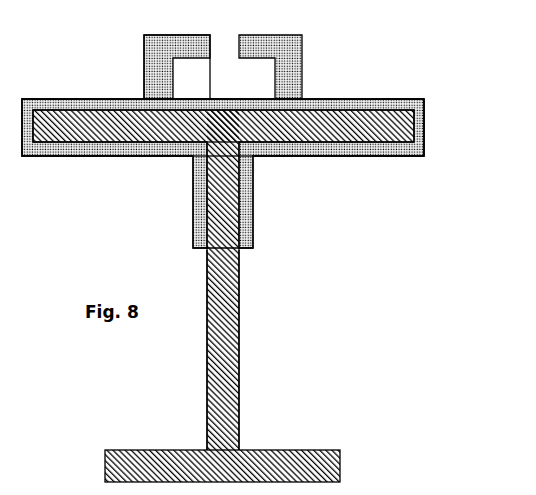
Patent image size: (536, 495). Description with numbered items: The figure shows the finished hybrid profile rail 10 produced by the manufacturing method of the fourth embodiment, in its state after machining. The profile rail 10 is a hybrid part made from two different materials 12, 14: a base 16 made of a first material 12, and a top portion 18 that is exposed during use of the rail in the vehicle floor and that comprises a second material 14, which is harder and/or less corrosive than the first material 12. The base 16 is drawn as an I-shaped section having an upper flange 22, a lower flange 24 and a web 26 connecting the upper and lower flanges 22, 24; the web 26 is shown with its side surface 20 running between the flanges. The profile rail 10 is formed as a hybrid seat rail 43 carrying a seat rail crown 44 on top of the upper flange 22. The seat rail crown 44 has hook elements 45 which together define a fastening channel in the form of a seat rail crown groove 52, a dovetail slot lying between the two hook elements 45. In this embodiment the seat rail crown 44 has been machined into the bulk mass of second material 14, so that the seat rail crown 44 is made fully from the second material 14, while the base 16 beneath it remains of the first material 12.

The profile rail 10 is at (335, 355).
The first material 12 is at (207, 372).
The second material 14 is at (373, 153).
The base 16 is at (243, 272).
The top portion 18 is at (353, 82).
The web side surface 20 is at (240, 405).
The upper flange 22 is at (83, 157).
The lower flange 24 is at (344, 462).
The web 26 is at (207, 295).
The hybrid seat rail 43 is at (360, 331).
The seat rail crown 44 is at (123, 57).
The hook elements 45 is at (172, 32).
The seat rail crown groove 52 is at (230, 73).